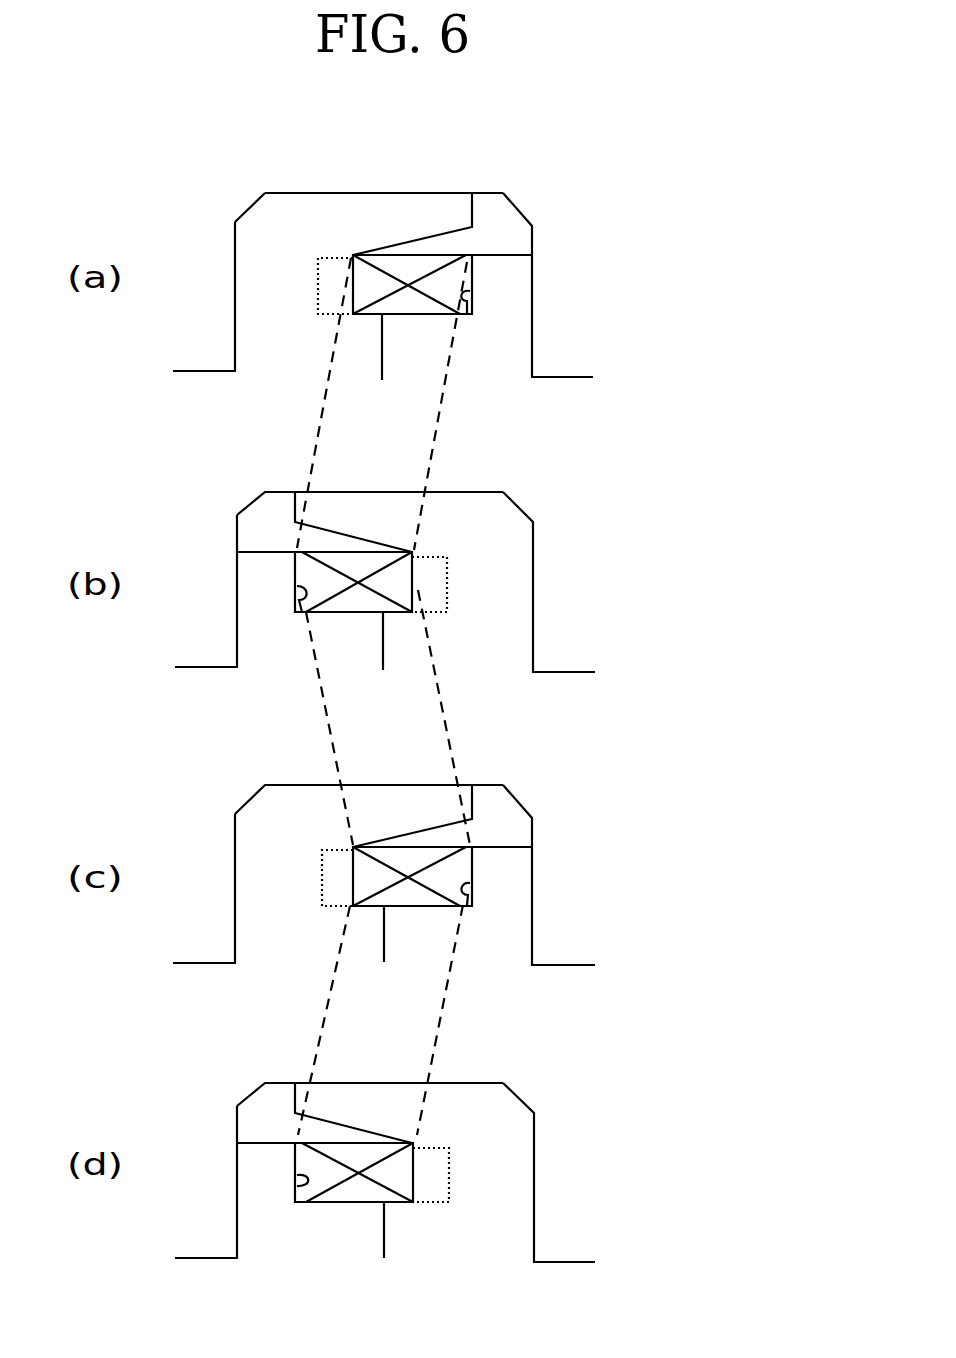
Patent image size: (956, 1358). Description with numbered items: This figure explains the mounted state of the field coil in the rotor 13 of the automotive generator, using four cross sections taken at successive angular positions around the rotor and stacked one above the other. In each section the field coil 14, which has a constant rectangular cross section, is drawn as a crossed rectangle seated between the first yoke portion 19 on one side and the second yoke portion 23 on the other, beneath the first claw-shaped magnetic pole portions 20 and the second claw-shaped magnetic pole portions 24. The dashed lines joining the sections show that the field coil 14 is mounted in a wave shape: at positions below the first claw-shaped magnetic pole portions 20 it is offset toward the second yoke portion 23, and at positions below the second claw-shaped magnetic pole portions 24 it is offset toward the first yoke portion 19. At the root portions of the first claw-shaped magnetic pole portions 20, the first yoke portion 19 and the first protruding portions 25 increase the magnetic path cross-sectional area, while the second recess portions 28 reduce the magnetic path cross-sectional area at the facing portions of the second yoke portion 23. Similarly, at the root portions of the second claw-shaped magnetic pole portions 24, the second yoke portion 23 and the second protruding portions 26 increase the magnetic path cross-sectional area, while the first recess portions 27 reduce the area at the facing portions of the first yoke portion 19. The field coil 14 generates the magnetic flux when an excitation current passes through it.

The rotor 13 is at (583, 155).
The field coil 14 is at (408, 265).
The first yoke portion 19 is at (282, 302).
The first claw-shaped magnetic pole portions 20 is at (333, 226).
The second yoke portion 23 is at (513, 283).
The second claw-shaped magnetic pole portions 24 is at (500, 232).
The first protruding portions 25 is at (330, 286).
The second protruding portions 26 is at (437, 573).
The first recess portions 27 is at (297, 604).
The second recess portions 28 is at (470, 300).